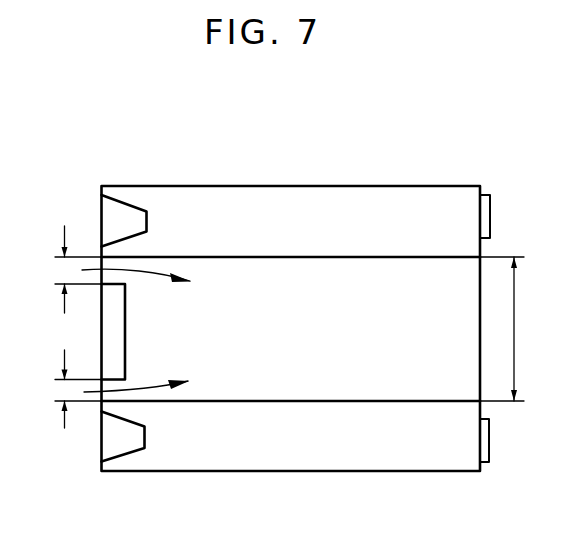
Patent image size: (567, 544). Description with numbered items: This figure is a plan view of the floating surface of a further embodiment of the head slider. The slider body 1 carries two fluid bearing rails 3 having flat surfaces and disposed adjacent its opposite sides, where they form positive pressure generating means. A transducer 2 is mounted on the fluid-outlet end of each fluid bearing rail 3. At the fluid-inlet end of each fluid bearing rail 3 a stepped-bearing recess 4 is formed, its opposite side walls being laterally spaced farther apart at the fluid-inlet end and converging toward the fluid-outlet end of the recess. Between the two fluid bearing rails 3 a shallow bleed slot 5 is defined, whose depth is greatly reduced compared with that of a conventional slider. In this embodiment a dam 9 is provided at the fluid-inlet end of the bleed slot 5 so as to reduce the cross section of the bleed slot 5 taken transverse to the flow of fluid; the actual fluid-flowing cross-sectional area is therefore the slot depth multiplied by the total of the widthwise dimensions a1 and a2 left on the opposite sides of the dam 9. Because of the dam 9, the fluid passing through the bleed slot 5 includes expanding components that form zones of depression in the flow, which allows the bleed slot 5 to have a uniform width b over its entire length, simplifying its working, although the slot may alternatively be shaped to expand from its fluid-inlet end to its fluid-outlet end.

The slider body 1 is at (268, 184).
The transducer 2 is at (492, 220).
The fluid bearing rail 3 is at (345, 205).
The recess 4 is at (112, 213).
The bleed slot 5 is at (403, 272).
The dam 9 is at (110, 323).
The widthwise dimension a1 is at (68, 269).
The widthwise dimension a2 is at (67, 389).
The width b is at (506, 329).